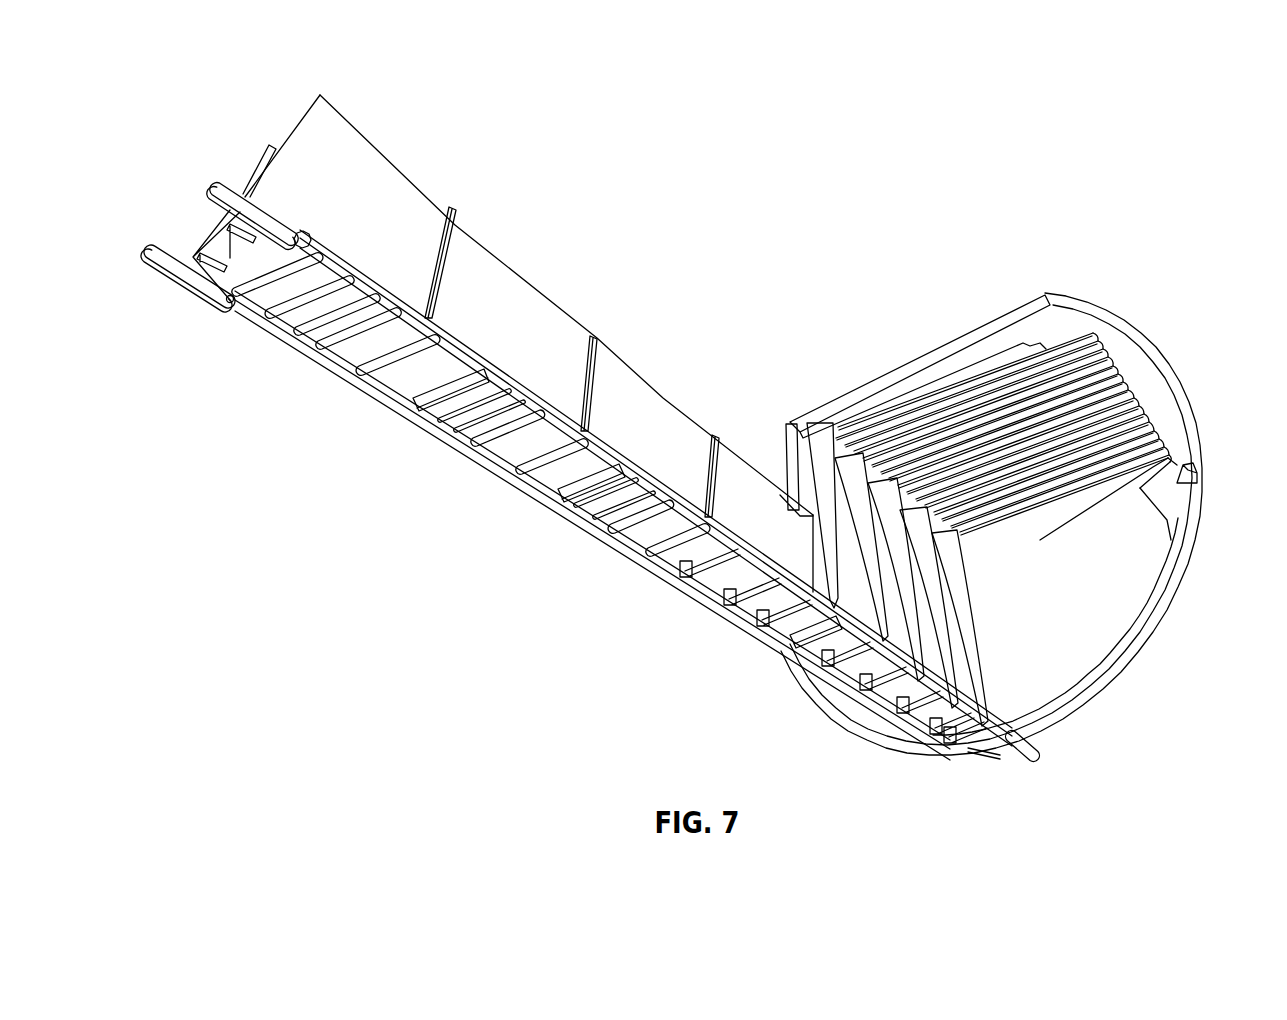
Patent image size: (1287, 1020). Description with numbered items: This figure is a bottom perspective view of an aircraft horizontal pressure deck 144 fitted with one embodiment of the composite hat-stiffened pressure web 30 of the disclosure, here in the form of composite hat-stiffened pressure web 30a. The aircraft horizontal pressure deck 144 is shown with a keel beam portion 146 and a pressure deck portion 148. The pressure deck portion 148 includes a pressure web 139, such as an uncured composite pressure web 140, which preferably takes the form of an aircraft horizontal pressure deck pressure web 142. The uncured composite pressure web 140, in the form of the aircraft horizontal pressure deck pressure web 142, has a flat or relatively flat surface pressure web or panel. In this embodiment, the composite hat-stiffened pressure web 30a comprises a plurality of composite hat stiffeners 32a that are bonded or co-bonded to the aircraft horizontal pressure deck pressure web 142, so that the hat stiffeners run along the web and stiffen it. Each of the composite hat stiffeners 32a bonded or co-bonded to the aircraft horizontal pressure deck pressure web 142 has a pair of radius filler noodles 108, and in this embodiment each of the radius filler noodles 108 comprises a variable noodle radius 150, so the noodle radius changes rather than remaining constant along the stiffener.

The composite hat-stiffened pressure web 30 is at (1202, 350).
The composite hat-stiffened pressure web 30a is at (1158, 405).
The composite hat stiffeners 32a is at (1066, 483).
The radius filler noodles 108 is at (1172, 447).
The pressure web 139 is at (1192, 601).
The uncured composite pressure web 140 is at (1165, 476).
The aircraft horizontal pressure deck pressure web 142 is at (1118, 360).
The aircraft horizontal pressure deck 144 is at (630, 240).
The keel beam portion 146 is at (507, 255).
The pressure deck portion 148 is at (982, 316).
The variable noodle radius 150 is at (1150, 427).